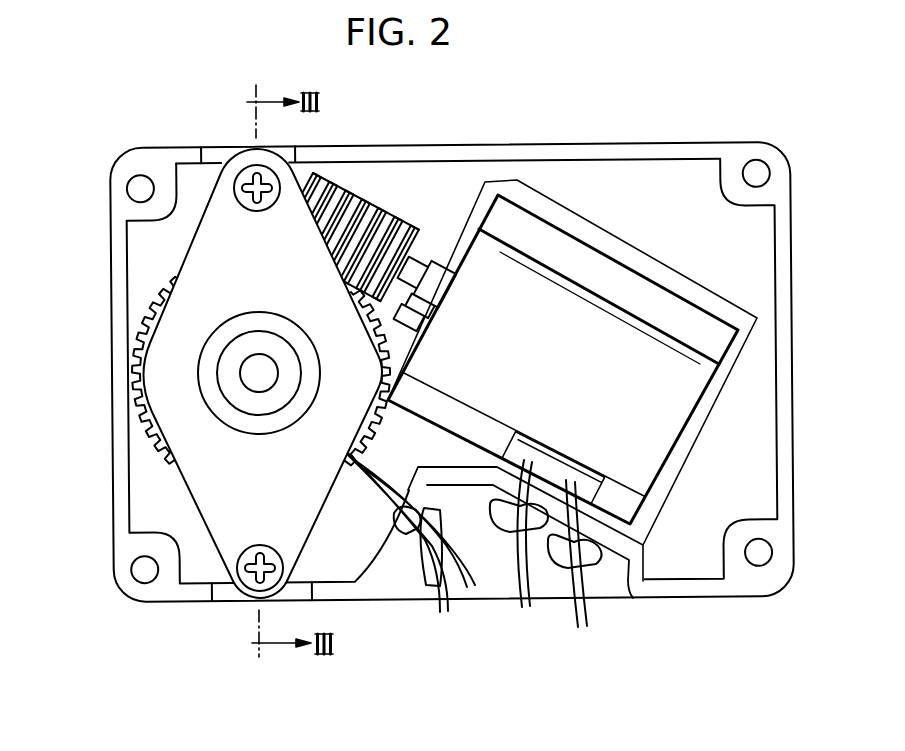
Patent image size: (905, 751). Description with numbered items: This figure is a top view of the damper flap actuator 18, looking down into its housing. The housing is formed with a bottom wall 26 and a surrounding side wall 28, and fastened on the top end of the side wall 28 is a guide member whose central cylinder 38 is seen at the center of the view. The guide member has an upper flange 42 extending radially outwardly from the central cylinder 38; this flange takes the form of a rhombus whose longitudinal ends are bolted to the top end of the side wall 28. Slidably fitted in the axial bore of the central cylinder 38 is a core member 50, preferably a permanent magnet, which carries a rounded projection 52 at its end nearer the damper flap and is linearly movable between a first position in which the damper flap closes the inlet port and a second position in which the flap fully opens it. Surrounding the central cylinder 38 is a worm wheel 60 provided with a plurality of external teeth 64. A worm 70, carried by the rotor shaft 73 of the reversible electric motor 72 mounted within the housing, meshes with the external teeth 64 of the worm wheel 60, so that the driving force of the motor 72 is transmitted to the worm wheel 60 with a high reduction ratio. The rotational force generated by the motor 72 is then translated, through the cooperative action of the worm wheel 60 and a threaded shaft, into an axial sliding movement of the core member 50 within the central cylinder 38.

The damper flap actuator 18 is at (707, 138).
The bottom wall 26 is at (610, 177).
The side wall 28 is at (493, 155).
The central cylinder 38 is at (289, 413).
The upper flange 42 is at (237, 537).
The core member 50 is at (245, 397).
The rounded projection 52 is at (260, 365).
The worm wheel 60 is at (144, 297).
The external teeth 64 is at (135, 362).
The worm 70 is at (368, 163).
The reversible electric motor 72 is at (640, 330).
The rotor shaft 73 is at (430, 250).